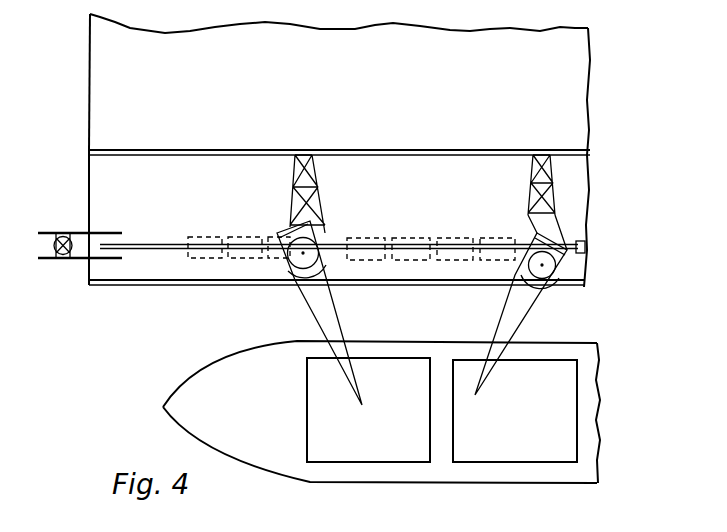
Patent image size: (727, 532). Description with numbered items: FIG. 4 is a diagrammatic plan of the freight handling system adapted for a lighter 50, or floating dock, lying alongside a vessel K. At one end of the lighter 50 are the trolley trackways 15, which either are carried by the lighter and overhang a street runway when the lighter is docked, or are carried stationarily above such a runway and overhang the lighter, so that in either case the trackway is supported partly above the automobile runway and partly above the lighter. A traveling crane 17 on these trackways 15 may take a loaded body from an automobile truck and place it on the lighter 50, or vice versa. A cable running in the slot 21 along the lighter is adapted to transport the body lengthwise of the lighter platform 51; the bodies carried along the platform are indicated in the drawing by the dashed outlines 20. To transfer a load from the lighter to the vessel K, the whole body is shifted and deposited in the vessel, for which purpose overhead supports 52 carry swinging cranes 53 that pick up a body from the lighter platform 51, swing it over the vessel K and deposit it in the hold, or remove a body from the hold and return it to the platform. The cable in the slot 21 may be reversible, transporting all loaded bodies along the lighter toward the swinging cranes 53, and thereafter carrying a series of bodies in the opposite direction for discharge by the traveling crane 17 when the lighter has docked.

The lighter 50 is at (339, 84).
The lighter platform 51 is at (339, 218).
The overhead supports 52 is at (322, 215).
The swinging cranes 53 is at (313, 304).
The trolley trackways 15 is at (94, 244).
The traveling crane 17 is at (50, 246).
The slot 21 is at (159, 240).
The dashed units / containers 20 is at (238, 237).
The vessel K is at (381, 412).